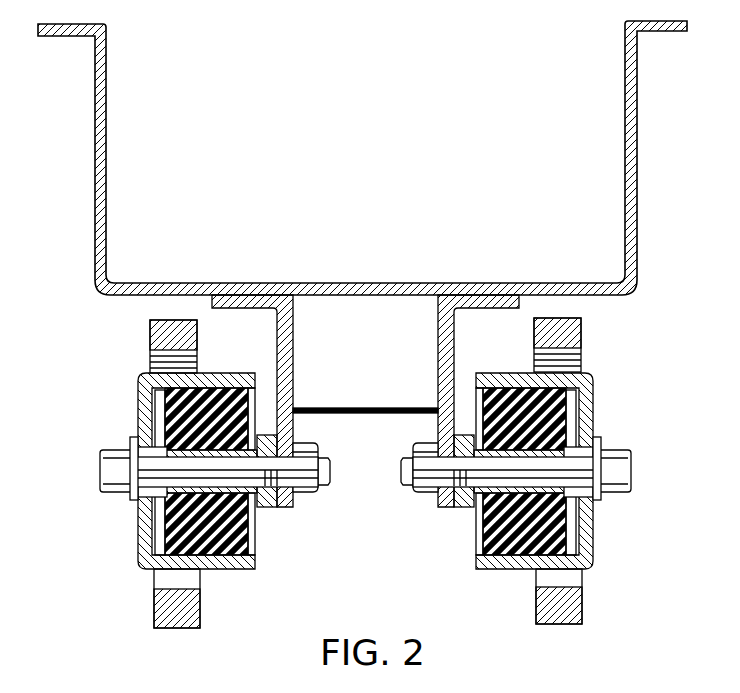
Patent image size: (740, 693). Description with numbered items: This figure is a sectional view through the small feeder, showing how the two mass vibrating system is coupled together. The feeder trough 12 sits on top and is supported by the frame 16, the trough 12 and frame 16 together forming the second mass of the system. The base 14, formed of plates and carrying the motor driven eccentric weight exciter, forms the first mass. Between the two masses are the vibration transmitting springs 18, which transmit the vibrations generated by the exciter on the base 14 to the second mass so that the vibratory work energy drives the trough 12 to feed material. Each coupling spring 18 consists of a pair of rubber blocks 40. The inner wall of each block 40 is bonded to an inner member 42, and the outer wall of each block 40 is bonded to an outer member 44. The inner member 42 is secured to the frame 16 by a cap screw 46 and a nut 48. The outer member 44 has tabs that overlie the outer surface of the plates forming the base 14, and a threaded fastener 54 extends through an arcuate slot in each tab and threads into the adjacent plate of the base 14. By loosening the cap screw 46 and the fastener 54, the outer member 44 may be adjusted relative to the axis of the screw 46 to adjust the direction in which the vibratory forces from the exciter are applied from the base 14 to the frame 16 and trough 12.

The feeder trough 12 is at (95, 128).
The base 14 is at (157, 612).
The frame 16 is at (444, 362).
The vibration transmitting springs 18 is at (228, 578).
The rubber block 40 is at (228, 398).
The inner member 42 is at (168, 527).
The outer member 44 is at (140, 372).
The cap screw 46 is at (140, 495).
The nut 48 is at (420, 492).
The threaded fastener 54 is at (115, 457).